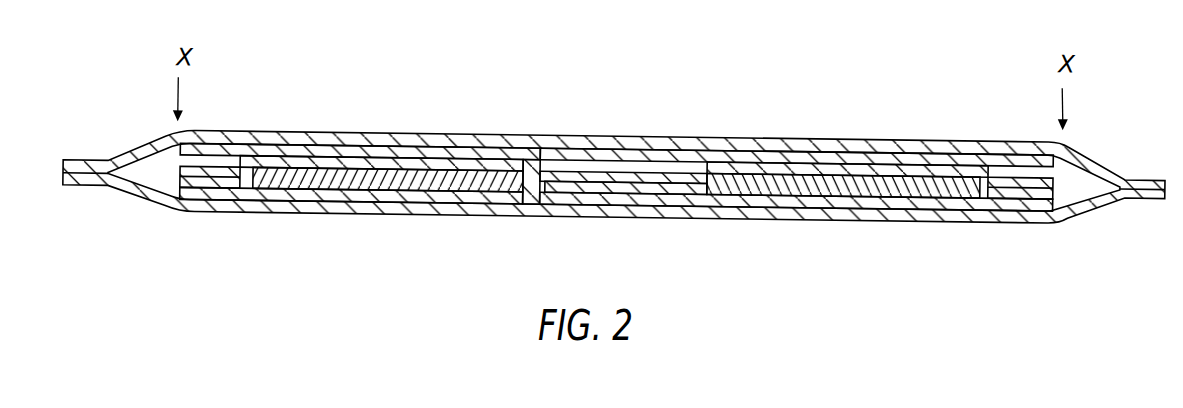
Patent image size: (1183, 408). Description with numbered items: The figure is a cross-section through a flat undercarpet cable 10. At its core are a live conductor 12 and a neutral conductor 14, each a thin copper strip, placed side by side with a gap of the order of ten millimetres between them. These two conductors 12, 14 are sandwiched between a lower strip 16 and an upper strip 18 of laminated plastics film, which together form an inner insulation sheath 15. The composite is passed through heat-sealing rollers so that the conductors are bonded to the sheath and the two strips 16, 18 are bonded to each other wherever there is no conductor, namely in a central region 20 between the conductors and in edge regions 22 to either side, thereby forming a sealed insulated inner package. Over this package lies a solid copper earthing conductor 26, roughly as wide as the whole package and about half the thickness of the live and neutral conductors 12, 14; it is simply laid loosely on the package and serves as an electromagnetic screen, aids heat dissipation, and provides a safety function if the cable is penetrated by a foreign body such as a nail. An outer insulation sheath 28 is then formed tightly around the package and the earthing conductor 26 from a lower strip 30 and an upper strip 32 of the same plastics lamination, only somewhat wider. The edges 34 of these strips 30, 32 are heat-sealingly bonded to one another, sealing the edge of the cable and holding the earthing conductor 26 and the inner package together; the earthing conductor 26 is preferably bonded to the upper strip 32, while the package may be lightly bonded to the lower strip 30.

The undercarpet cable 10 is at (614, 181).
The live conductor 12 is at (372, 183).
The neutral conductor 14 is at (788, 188).
The inner insulation sheath 15 is at (578, 192).
The lower strip 16 is at (930, 201).
The upper strip 18 is at (843, 162).
The central region 20 is at (647, 189).
The edge regions 22 is at (222, 191).
The earthing conductor 26 is at (693, 151).
The outer insulation sheath 28 is at (940, 130).
The lower strip of outer sheath 30 is at (460, 203).
The upper strip of outer sheath 32 is at (413, 150).
The edges of the strips 34 is at (85, 167).